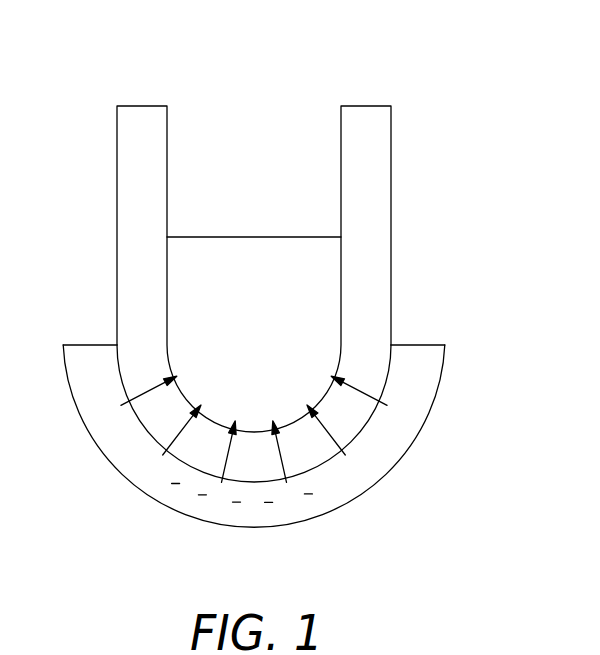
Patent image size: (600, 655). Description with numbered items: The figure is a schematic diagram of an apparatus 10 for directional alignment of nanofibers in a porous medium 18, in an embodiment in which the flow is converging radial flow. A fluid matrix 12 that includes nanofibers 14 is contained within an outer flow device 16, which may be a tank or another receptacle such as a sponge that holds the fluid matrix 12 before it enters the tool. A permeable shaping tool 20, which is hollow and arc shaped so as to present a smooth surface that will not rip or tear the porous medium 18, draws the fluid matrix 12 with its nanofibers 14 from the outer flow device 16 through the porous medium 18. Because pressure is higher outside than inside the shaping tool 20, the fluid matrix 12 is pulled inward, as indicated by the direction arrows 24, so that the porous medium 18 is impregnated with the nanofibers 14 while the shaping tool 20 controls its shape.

The apparatus 10 is at (436, 50).
The fluid matrix 12 is at (148, 480).
The nanofibers 14 is at (237, 501).
The outer flow device 16 is at (362, 495).
The porous medium 18 is at (145, 152).
The permeable shaping tool 20 is at (203, 250).
The direction arrows 24 is at (183, 433).